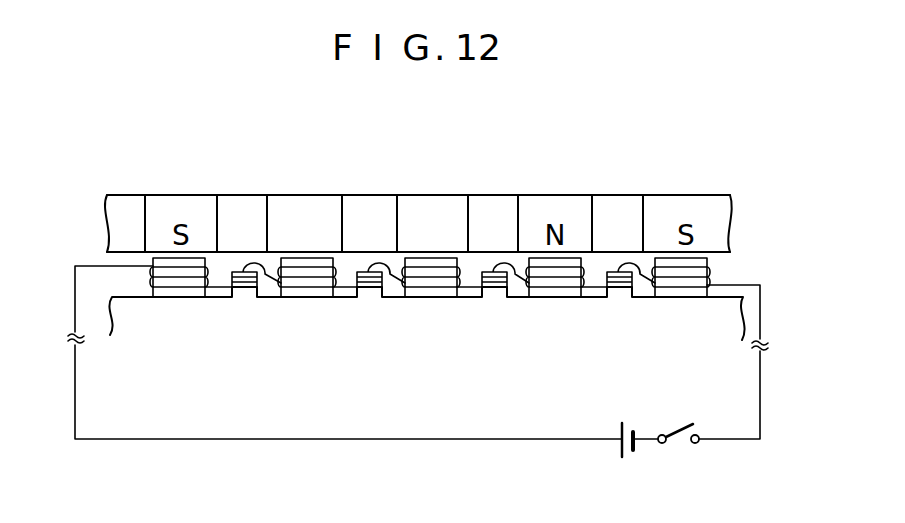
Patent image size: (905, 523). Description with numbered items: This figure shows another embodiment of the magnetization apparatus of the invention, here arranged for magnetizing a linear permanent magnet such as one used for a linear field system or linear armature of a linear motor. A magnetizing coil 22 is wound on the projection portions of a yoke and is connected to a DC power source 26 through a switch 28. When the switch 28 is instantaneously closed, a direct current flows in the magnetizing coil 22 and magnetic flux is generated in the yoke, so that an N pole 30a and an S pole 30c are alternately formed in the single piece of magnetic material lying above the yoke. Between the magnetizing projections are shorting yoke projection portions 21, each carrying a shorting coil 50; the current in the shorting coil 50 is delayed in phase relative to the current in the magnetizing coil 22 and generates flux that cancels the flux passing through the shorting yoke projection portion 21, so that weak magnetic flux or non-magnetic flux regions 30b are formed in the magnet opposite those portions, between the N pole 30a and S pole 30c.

The shorting yoke projection portion 21 is at (426, 328).
The magnetizing coil 22 is at (93, 265).
The DC power source 26 is at (640, 448).
The switch 28 is at (697, 446).
The N pole 30a is at (305, 205).
The weak magnetic flux or non-magnetic flux region 30b is at (440, 182).
The S pole 30c is at (428, 205).
The shorting coil 50 is at (441, 300).